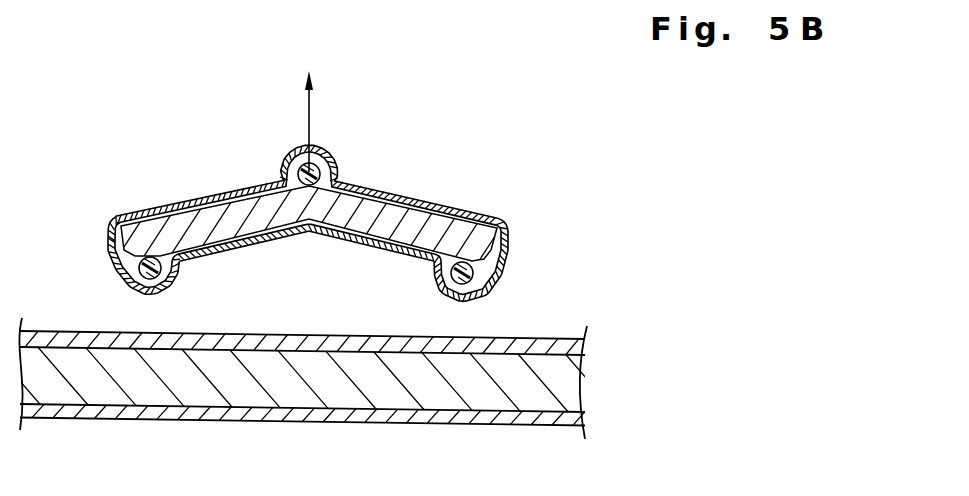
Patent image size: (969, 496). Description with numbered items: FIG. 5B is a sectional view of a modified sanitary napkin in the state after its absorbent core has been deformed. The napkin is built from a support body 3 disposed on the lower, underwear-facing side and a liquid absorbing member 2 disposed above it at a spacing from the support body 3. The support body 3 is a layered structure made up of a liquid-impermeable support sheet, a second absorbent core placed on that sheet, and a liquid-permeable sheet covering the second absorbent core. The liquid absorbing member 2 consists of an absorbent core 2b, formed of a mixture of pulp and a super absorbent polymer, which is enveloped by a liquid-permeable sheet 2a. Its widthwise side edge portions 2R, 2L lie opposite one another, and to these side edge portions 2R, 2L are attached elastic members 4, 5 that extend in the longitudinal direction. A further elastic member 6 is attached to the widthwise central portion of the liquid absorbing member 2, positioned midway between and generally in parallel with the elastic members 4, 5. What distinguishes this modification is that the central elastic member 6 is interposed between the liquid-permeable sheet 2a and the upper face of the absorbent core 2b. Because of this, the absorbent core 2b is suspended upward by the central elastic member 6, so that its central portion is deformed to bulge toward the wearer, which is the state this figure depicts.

The liquid absorbing member 2 is at (312, 192).
The liquid-permeable sheet 2a is at (232, 190).
The absorbent core 2b is at (405, 222).
The side edge portion 2L is at (106, 243).
The side edge portion 2R is at (508, 250).
The support body 3 is at (377, 381).
The elastic member 4 is at (476, 276).
The elastic member 5 is at (139, 277).
The elastic member 6 is at (325, 151).